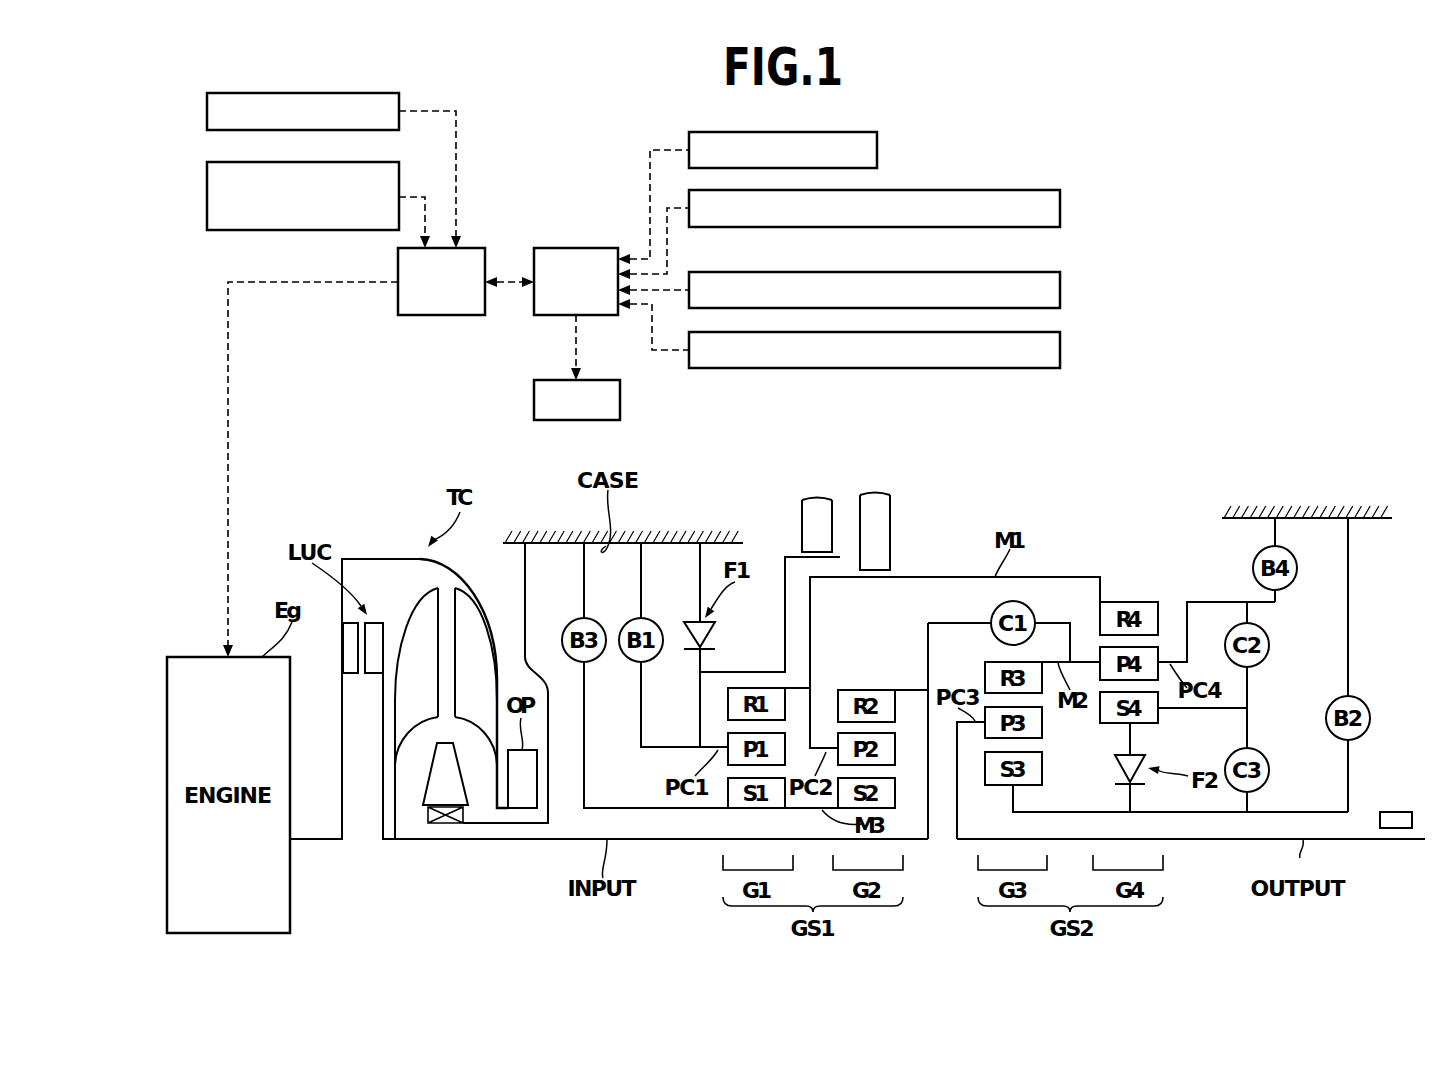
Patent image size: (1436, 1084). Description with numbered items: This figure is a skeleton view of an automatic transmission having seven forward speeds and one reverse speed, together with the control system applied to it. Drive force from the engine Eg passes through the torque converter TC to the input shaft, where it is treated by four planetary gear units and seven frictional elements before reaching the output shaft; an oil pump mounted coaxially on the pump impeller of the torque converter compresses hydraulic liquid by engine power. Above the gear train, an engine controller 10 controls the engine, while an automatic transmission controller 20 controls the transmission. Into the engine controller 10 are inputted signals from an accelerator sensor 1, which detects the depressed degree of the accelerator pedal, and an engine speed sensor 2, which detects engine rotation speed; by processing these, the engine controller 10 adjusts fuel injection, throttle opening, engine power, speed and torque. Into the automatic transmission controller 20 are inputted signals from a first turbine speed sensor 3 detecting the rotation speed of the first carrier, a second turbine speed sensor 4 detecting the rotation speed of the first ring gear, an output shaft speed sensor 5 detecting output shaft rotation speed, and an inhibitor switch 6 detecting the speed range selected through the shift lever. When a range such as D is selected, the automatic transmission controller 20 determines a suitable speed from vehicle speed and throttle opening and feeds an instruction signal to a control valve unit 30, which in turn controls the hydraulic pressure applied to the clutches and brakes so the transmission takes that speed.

The accelerator sensor 1 is at (269, 111).
The engine speed sensor 2 is at (269, 196).
The first turbine speed sensor 3 is at (907, 371).
The second turbine speed sensor 4 is at (907, 421).
The output shaft speed sensor 5 is at (1054, 580).
The inhibitor switch 6 is at (816, 150).
The engine controller 10 is at (441, 310).
The automatic transmission controller 20 is at (576, 255).
The control valve unit 30 is at (541, 400).